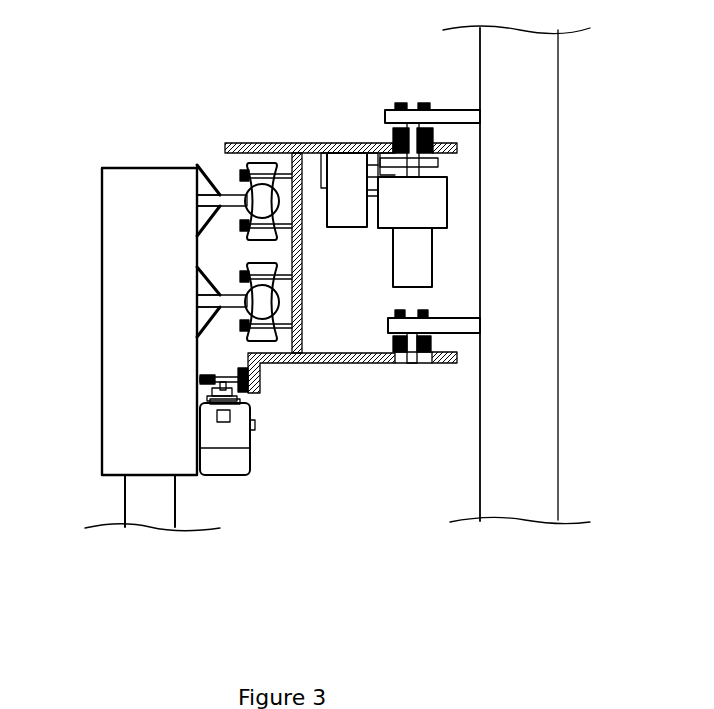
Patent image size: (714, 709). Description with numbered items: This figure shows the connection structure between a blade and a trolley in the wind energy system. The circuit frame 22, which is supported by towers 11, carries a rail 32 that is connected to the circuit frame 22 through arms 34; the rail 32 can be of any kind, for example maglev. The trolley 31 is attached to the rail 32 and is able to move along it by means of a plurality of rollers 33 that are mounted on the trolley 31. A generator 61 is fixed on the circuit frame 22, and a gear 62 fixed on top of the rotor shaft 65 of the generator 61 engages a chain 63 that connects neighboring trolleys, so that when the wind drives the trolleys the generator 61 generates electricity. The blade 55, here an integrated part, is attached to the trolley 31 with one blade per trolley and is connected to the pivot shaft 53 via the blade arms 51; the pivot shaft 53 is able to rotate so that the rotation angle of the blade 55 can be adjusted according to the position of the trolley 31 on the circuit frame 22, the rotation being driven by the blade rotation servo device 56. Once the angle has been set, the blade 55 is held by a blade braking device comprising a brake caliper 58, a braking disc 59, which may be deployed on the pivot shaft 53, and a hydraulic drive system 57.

The tower 11 is at (148, 500).
The circuit frame 22 is at (127, 200).
The trolley 31 is at (297, 143).
The rail 32 is at (258, 300).
The roller 33 is at (250, 222).
The arm 34 is at (208, 200).
The blade arm 51 is at (445, 115).
The pivot shaft 53 is at (480, 107).
The blade 55 is at (530, 413).
The blade rotation servo device 56 is at (420, 258).
The hydraulic drive system 57 is at (347, 178).
The brake caliper 58 is at (378, 148).
The braking disc 59 is at (432, 163).
The generator 61 is at (223, 435).
The gear 62 is at (205, 378).
The chain 63 is at (240, 372).
The rotor shaft 65 is at (252, 407).